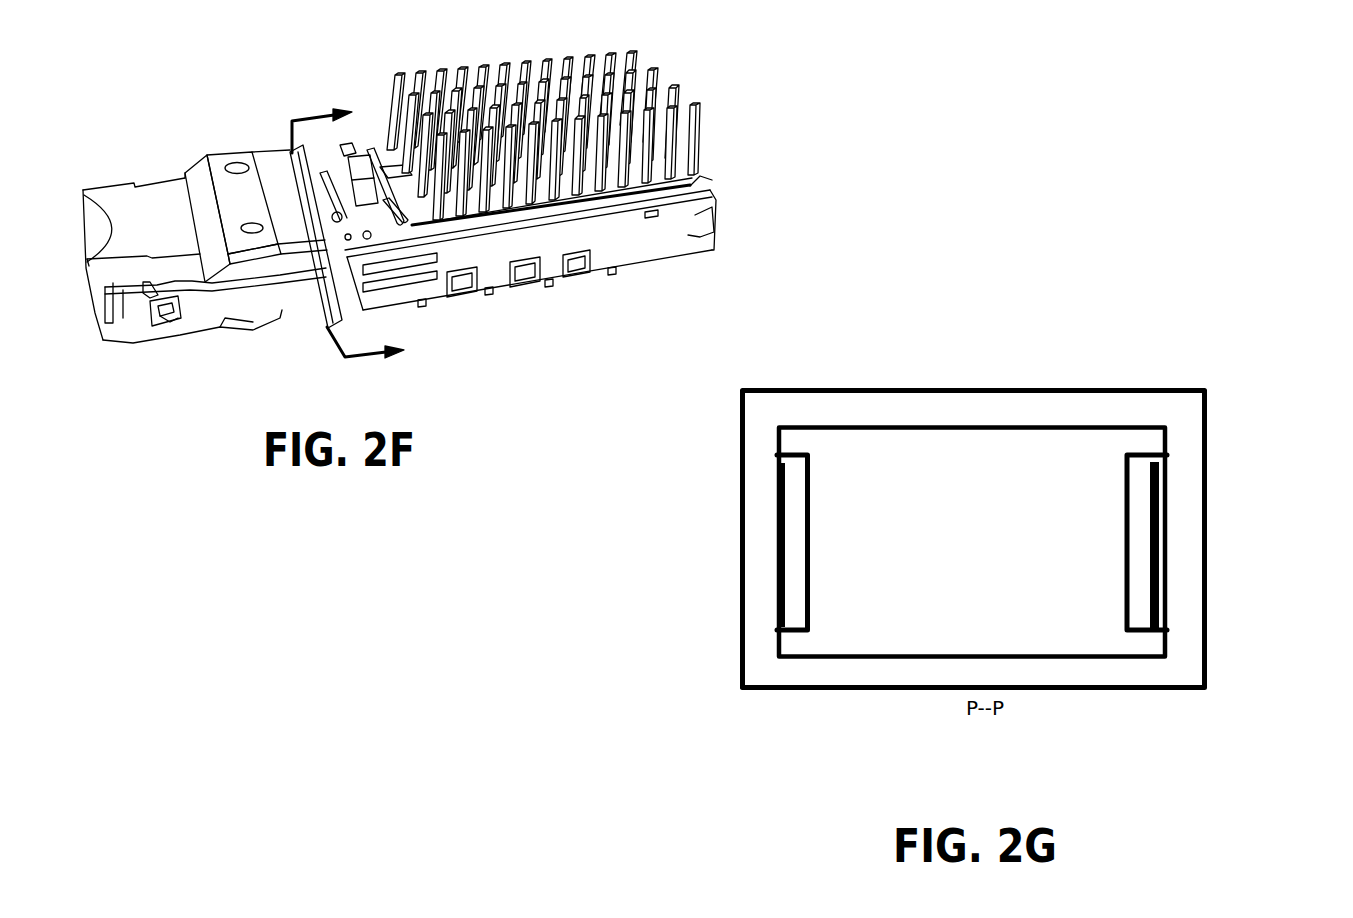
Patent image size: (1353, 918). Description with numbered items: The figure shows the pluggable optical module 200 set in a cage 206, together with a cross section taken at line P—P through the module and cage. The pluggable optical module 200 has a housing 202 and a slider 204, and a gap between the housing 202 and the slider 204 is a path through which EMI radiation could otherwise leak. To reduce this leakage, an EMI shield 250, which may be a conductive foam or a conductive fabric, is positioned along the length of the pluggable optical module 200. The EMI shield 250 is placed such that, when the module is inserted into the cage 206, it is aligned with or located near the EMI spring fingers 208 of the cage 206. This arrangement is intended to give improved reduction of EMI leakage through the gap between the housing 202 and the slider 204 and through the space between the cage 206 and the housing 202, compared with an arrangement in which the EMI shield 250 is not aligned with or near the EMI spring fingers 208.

In FIG. 2F, the pluggable optical module 200 is at (186, 56).
In FIG. 2G, the housing 202 is at (895, 397).
In FIG. 2G, the slider 204 is at (1160, 540).
In FIG. 2G, the cage 206 is at (1068, 383).
In FIG. 2G, the EMI spring fingers 208 is at (740, 568).
In FIG. 2G, the EMI shield 250 is at (818, 633).